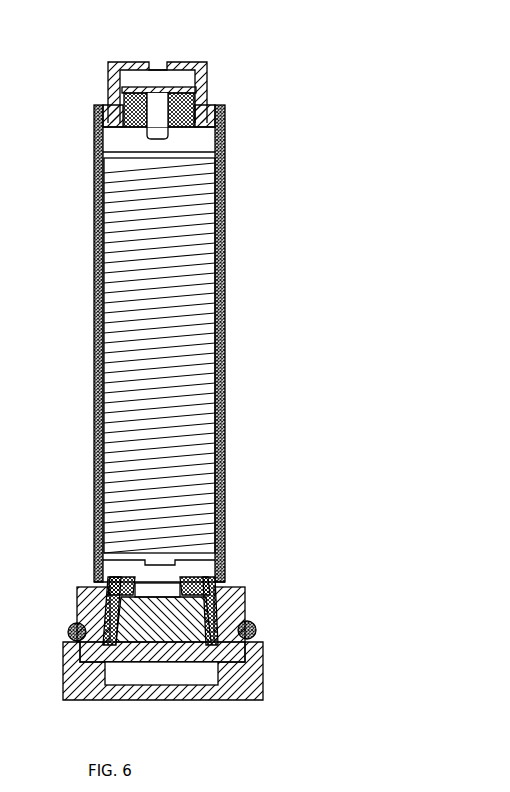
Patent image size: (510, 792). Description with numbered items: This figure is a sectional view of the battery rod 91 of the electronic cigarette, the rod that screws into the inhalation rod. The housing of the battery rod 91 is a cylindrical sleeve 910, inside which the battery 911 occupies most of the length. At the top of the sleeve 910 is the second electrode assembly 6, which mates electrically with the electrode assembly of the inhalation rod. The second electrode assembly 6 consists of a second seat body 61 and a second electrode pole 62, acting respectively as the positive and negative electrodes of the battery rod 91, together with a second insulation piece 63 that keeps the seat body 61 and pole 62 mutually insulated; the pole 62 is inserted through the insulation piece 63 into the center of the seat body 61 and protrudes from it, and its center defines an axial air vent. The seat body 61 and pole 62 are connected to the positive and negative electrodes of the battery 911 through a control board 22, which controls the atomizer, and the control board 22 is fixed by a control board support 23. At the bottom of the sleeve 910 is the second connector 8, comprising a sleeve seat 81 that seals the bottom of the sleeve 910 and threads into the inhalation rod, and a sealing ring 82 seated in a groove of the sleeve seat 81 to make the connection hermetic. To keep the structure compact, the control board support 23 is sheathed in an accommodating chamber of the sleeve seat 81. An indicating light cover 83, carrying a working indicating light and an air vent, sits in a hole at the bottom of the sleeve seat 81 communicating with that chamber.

The second electrode assembly 6 is at (223, 97).
The second seat body 61 is at (206, 84).
The second electrode pole 62 is at (197, 96).
The second insulation piece 63 is at (198, 106).
The battery rod 91 is at (257, 356).
The sleeve 910 is at (222, 192).
The battery 911 is at (217, 258).
The control board support 23 is at (206, 578).
The control board 22 is at (205, 598).
The second connector 8 is at (214, 636).
The sleeve seat 81 is at (243, 600).
The sealing ring 82 is at (255, 626).
The indicating light cover 83 is at (232, 671).